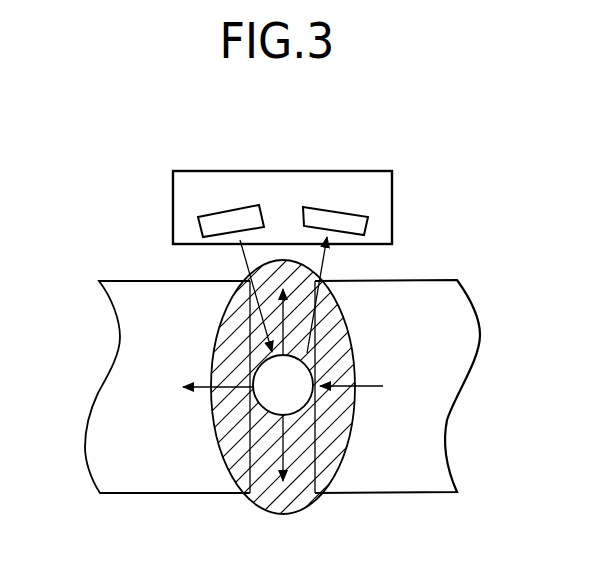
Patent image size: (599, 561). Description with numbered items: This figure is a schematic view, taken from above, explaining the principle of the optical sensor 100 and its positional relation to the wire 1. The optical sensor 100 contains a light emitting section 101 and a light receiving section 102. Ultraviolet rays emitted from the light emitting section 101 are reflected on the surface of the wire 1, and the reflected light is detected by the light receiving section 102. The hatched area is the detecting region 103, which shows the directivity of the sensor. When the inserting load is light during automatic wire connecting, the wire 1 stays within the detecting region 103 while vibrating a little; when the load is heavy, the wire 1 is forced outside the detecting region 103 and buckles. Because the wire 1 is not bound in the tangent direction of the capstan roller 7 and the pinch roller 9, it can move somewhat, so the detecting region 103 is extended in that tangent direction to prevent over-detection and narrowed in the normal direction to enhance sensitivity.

The wire 1 is at (297, 373).
The capstan roller 7 is at (98, 469).
The pinch roller 9 is at (418, 452).
The optical sensor 100 is at (303, 171).
The light emitting section 101 is at (223, 209).
The light receiving section 102 is at (346, 207).
The detecting region 103 is at (332, 320).